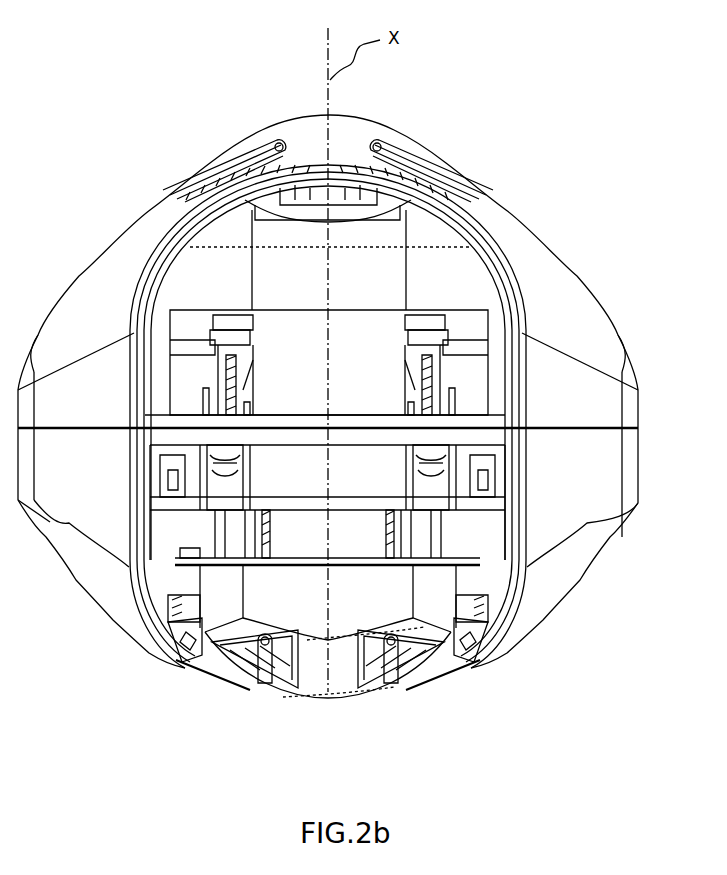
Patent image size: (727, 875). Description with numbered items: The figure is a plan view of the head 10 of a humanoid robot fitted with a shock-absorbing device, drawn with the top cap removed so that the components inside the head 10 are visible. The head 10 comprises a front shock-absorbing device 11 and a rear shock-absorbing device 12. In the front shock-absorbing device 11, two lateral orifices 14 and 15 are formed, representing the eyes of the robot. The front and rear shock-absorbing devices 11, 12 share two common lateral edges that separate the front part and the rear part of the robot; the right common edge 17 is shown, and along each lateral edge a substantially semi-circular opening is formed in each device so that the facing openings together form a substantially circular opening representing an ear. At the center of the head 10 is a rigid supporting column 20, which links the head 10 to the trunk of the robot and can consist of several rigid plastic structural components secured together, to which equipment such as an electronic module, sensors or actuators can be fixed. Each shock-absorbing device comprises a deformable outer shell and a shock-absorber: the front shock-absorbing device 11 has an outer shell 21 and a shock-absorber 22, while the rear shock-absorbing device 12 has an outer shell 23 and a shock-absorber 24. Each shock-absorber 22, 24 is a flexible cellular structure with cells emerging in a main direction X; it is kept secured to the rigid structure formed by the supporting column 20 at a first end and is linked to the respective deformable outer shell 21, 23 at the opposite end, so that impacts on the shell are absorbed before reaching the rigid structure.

The head 10 is at (100, 198).
The front shock-absorbing device 11 is at (527, 247).
The rear shock-absorbing device 12 is at (590, 537).
The lateral orifice 14 is at (424, 157).
The lateral orifice 15 is at (233, 153).
The right common edge 17 is at (604, 427).
The supporting column 20 is at (475, 380).
The outer shell 21 is at (561, 280).
The shock-absorber 22 is at (447, 233).
The outer shell 23 is at (92, 562).
The shock-absorber 24 is at (307, 612).